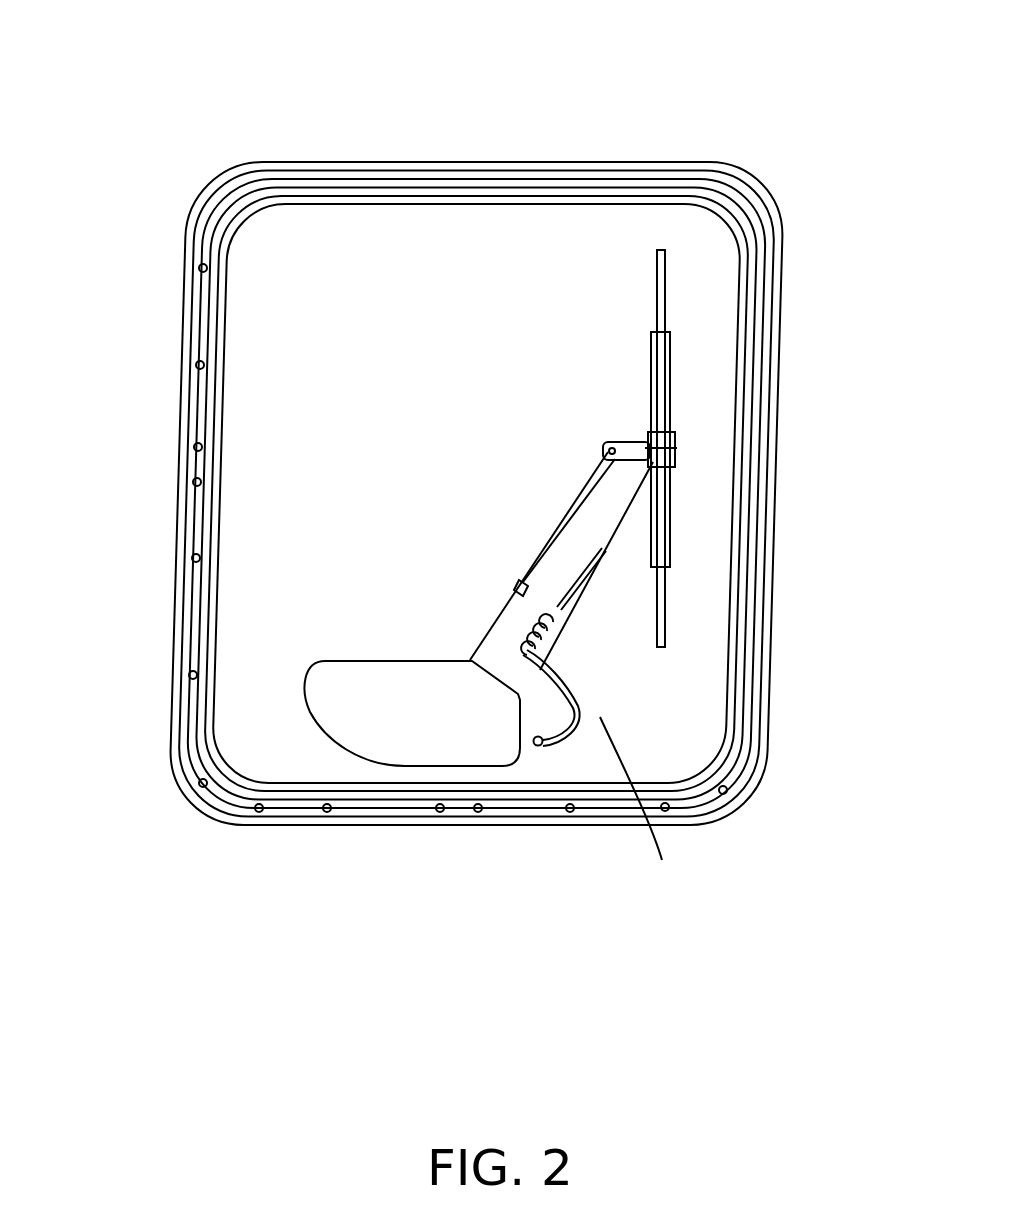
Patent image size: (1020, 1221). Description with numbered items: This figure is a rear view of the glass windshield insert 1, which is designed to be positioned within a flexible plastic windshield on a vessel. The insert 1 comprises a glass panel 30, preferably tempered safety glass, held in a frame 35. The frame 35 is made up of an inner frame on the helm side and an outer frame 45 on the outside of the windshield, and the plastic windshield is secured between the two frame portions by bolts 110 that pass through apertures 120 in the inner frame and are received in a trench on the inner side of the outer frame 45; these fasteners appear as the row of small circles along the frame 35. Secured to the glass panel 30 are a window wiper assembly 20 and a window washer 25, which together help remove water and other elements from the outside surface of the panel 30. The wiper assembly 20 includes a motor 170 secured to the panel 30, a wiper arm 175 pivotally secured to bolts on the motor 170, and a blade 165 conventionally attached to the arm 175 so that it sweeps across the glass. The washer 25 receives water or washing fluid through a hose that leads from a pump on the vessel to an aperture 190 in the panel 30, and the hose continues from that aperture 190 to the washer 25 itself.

The glass windshield insert 1 is at (584, 126).
The window wiper assembly 20 is at (643, 810).
The window washer 25 is at (557, 747).
The glass panel 30 is at (618, 233).
The frame 35 is at (783, 268).
The outer frame 45 is at (763, 445).
The bolts 110 is at (728, 793).
The apertures 120 is at (190, 676).
The blade 165 is at (650, 372).
The motor 170 is at (382, 660).
The arm 175 is at (557, 525).
The aperture 190 is at (535, 746).